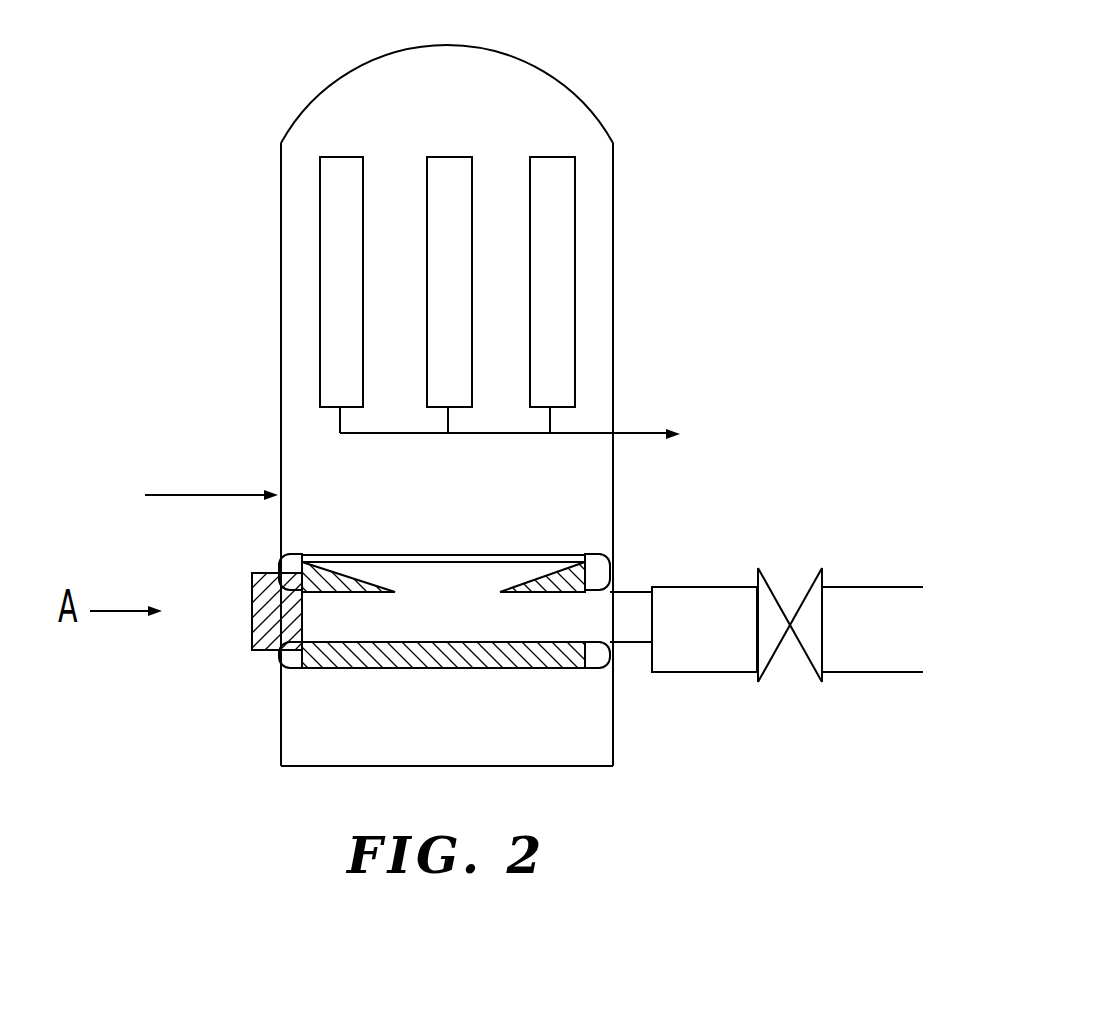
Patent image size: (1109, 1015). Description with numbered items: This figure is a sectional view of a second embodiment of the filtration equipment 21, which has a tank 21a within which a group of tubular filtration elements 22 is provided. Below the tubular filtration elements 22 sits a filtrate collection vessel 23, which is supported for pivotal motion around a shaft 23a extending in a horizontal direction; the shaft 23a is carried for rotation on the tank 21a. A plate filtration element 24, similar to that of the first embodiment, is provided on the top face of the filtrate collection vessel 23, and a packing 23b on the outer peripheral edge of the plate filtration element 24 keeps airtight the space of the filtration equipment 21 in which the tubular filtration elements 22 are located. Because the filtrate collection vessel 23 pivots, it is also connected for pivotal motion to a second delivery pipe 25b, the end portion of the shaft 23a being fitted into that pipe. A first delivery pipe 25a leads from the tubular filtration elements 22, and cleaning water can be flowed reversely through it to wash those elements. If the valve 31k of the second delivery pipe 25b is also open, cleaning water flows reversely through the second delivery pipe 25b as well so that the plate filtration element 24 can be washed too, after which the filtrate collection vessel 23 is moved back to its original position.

The filtration equipment 21 is at (632, 88).
The tank 21a is at (281, 280).
The tubular filtration elements 22 is at (320, 160).
The filtrate collection vessel 23 is at (422, 616).
The shaft 23a is at (343, 625).
The packing 23b is at (287, 667).
The plate filtration element 24 is at (398, 556).
The first delivery pipe 25a is at (638, 434).
The second delivery pipe 25b is at (725, 587).
The valve 31k is at (808, 665).